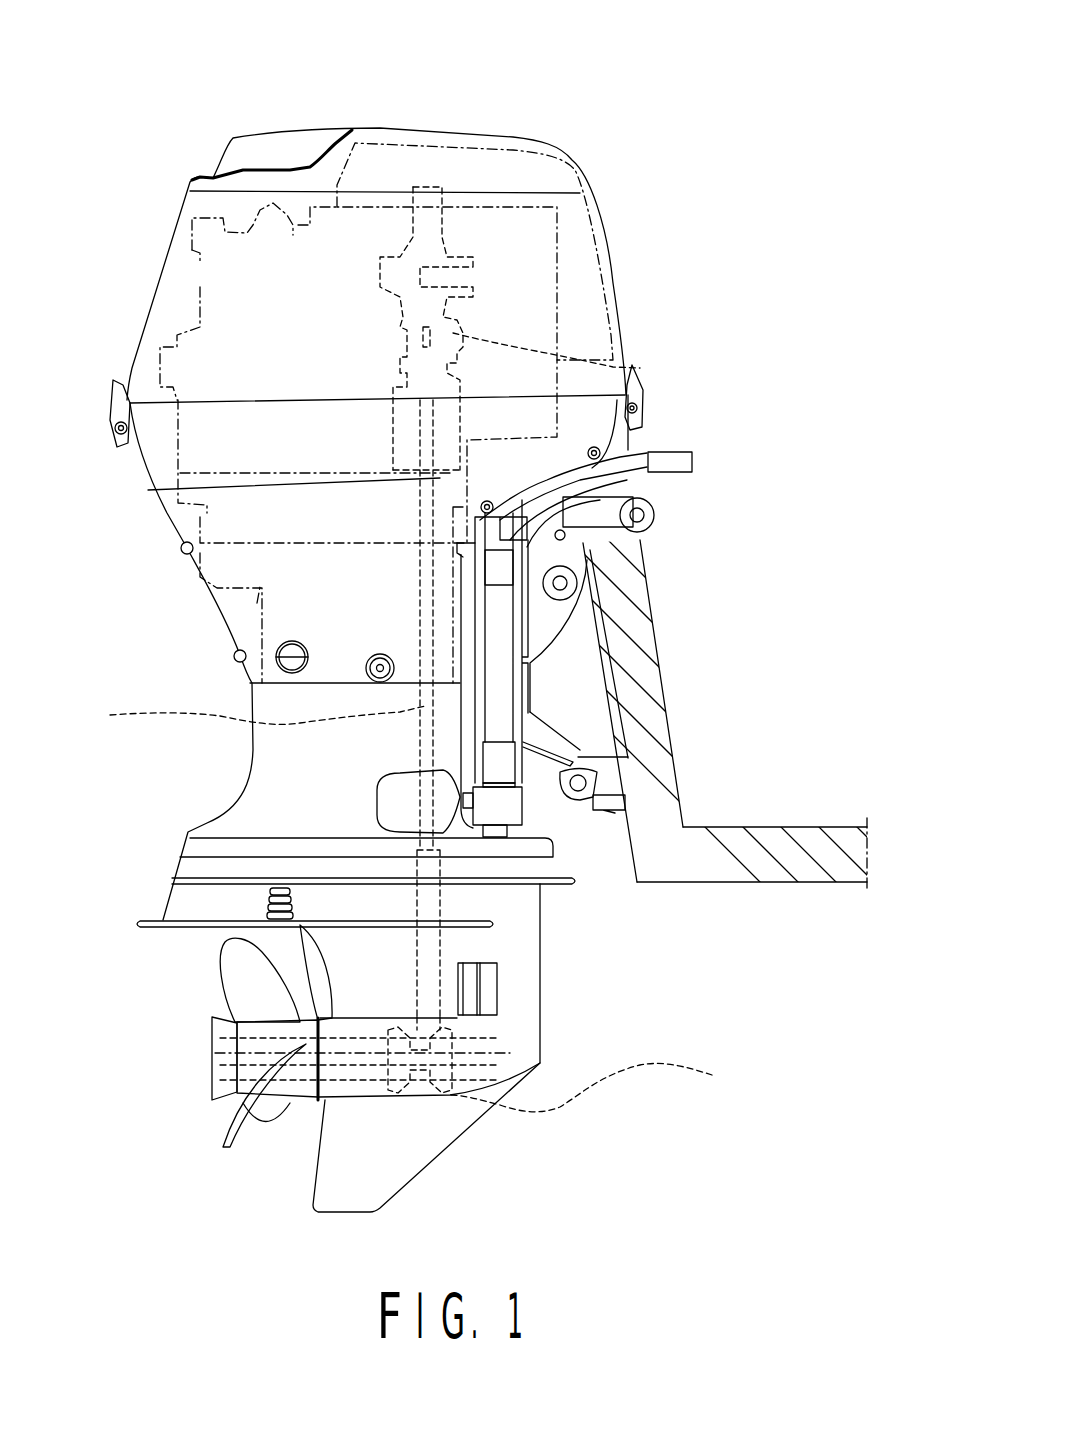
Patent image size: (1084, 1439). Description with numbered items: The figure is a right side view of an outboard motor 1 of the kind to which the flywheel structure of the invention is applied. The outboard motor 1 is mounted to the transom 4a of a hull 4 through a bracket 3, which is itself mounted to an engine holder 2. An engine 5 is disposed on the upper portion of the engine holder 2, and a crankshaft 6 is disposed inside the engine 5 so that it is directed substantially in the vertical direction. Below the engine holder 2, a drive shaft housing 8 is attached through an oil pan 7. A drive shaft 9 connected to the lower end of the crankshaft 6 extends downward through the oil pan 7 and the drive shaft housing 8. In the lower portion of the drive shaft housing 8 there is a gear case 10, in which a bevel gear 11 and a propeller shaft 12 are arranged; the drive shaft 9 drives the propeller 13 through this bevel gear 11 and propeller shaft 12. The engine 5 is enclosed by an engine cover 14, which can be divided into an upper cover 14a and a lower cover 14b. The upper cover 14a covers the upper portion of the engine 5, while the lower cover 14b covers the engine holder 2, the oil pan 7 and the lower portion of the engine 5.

The outboard motor 1 is at (488, 120).
The engine holder 2 is at (167, 513).
The bracket 3 is at (580, 737).
The hull 4 is at (753, 818).
The transom 4a is at (655, 680).
The engine 5 is at (195, 322).
The crankshaft 6 is at (640, 368).
The oil pan 7 is at (257, 603).
The drive shaft housing 8 is at (243, 825).
The drive shaft 9 is at (256, 715).
The gear case 10 is at (525, 1010).
The bevel gear 11 is at (597, 1085).
The propeller shaft 12 is at (337, 1063).
The propeller 13 is at (223, 1123).
The engine cover 14 is at (609, 258).
The upper cover 14a is at (615, 313).
The lower cover 14b is at (600, 438).